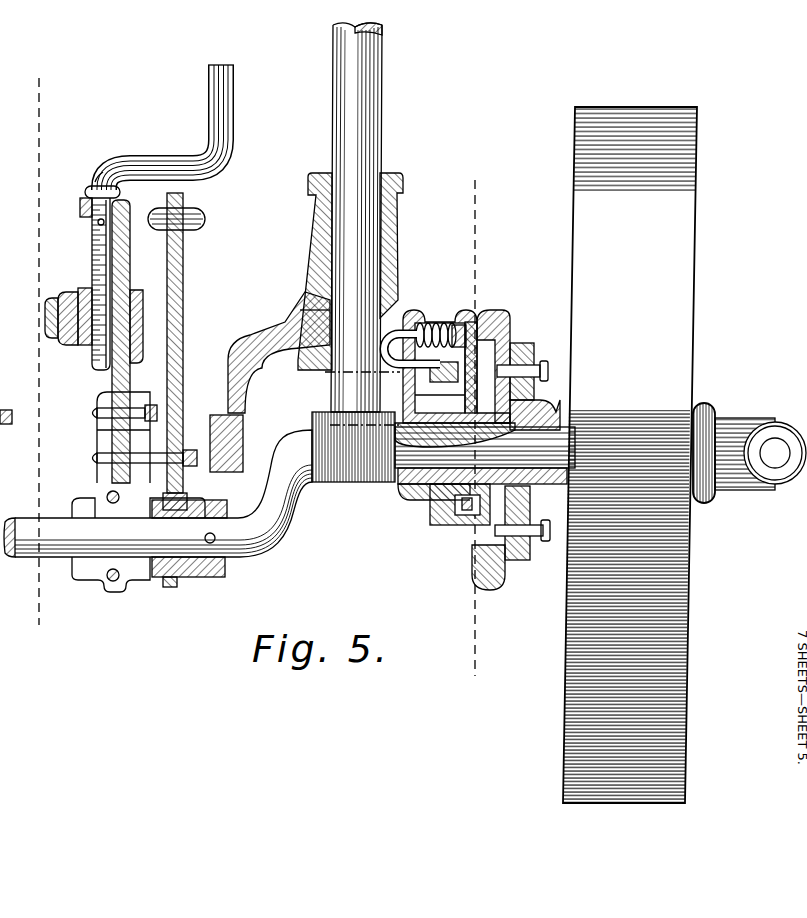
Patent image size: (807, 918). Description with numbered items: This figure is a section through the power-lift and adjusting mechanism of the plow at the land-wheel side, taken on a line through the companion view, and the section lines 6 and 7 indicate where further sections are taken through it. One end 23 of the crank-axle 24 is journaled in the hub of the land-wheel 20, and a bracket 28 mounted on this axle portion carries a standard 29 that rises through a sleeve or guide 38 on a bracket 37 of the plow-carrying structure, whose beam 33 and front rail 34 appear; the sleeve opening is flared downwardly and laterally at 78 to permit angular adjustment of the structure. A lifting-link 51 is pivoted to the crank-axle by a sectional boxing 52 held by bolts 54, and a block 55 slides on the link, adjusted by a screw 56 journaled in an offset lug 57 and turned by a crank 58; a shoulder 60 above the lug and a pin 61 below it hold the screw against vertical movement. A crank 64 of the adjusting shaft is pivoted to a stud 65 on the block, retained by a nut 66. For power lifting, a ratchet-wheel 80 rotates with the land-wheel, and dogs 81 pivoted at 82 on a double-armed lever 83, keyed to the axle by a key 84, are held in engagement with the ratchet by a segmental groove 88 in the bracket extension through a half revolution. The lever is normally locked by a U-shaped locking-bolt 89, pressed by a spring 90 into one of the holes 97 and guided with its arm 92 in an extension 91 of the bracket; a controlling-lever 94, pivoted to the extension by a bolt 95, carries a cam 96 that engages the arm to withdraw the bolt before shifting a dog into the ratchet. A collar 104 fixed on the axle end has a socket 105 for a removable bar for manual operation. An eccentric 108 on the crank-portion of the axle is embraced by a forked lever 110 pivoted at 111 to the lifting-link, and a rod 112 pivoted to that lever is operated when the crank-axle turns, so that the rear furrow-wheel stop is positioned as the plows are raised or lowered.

The section line 6- 6 is at (36, 352).
The section line 7- 7 is at (471, 429).
The land-wheel 20 is at (630, 455).
The end of crank-axle 23 is at (485, 447).
The crank-axle 24 is at (237, 560).
The bracket 28 is at (408, 490).
The standard 29 is at (374, 126).
The beam 33 is at (245, 427).
The front rail or angle-bar 34 is at (9, 438).
The bracket 37 is at (256, 344).
The sleeve or guide 38 is at (312, 234).
The link 51 is at (116, 262).
The boxing 52 is at (88, 565).
The bolt 54 is at (107, 495).
The block 55 is at (145, 304).
The screw 56 is at (93, 245).
The offset lug 57 is at (80, 202).
The crank 58 is at (169, 127).
The shoulder 60 is at (95, 186).
The pin 61 is at (98, 222).
The crank 64 is at (72, 346).
The stud 65 is at (46, 320).
The nut 66 is at (52, 303).
The flared opening 78 is at (318, 306).
The ratchet-wheel 80 is at (538, 415).
The dog 81 is at (535, 360).
The pivot 82 is at (534, 452).
The double-armed lever 83 is at (468, 525).
The key 84 is at (445, 502).
The segmental groove 88 is at (462, 505).
The locking-bolt 89 is at (458, 326).
The spring 90 is at (423, 330).
The extension 91 is at (440, 323).
The arm 92 is at (400, 362).
The controlling-lever 94 is at (472, 345).
The bolt 95 is at (455, 439).
The cam 96 is at (372, 432).
The hole 97 is at (505, 335).
The collar 104 is at (727, 425).
The socket 105 is at (771, 440).
The eccentric 108 is at (168, 587).
The lever 110 is at (183, 326).
The pivot 111 is at (150, 455).
The rod 112 is at (198, 216).